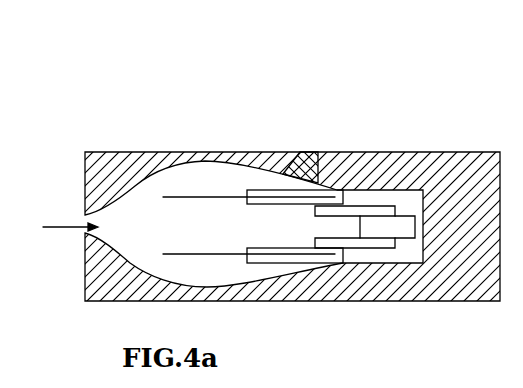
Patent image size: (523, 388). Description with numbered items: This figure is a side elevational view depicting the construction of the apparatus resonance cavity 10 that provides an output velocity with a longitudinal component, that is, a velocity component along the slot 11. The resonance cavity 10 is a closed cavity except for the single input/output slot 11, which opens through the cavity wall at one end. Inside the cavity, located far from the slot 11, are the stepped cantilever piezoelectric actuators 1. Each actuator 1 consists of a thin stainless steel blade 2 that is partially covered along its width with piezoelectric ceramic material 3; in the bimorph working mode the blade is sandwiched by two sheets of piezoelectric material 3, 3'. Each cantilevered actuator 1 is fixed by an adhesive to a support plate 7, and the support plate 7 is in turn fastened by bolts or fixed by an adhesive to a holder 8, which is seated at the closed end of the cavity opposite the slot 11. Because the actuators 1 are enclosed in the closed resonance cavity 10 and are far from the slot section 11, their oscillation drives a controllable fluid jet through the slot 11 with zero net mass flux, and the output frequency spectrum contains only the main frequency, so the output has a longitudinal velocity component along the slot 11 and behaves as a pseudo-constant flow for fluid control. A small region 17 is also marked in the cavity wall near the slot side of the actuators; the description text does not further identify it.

The stepped cantilever piezoelectric actuator 1 is at (257, 184).
The thin stainless steel blade 2 is at (187, 198).
The piezoelectric ceramic material 3 is at (305, 229).
The piezoelectric material sheet 3' is at (281, 226).
The support plate 7 is at (377, 206).
The holder 8 is at (402, 232).
The resonance cavity 10 is at (187, 178).
The slot 11 is at (56, 228).
The insert region 17 is at (314, 152).